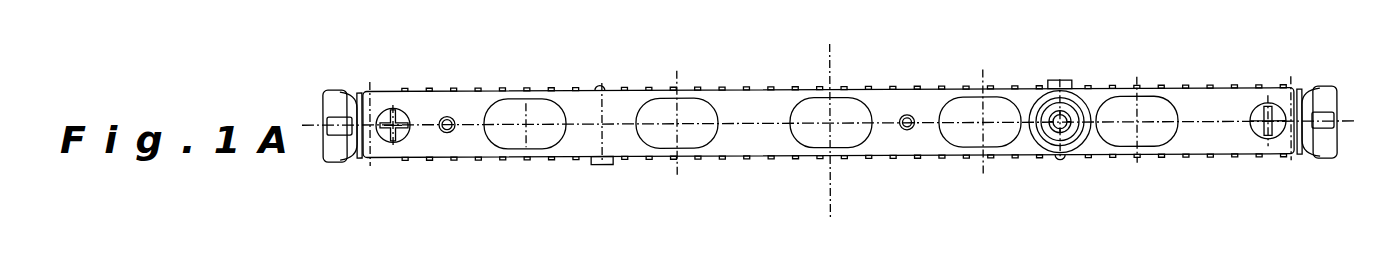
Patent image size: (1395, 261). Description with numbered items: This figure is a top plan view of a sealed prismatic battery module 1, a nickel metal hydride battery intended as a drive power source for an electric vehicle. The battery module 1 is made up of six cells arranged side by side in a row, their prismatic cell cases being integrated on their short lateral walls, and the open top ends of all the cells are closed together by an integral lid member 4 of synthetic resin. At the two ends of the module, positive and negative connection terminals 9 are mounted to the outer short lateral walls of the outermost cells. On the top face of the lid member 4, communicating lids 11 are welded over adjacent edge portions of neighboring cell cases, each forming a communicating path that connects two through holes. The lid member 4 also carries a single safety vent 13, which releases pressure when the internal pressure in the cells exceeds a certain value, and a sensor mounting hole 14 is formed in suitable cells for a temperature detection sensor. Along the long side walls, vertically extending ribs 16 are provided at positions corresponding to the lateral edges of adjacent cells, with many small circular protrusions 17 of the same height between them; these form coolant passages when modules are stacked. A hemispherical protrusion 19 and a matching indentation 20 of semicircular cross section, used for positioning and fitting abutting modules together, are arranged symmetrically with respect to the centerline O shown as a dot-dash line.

The battery module 1 is at (305, 78).
The lid member 4 is at (588, 103).
The connection terminal 9 is at (336, 117).
The communicating lid 11 is at (510, 115).
The safety vent 13 is at (1070, 113).
The sensor mounting hole 14 is at (440, 133).
The protruding rib 16 is at (523, 88).
The circular protrusion 17 is at (495, 90).
The protrusion 19 is at (602, 86).
The indentation 20 is at (602, 165).
The centerline O is at (827, 64).